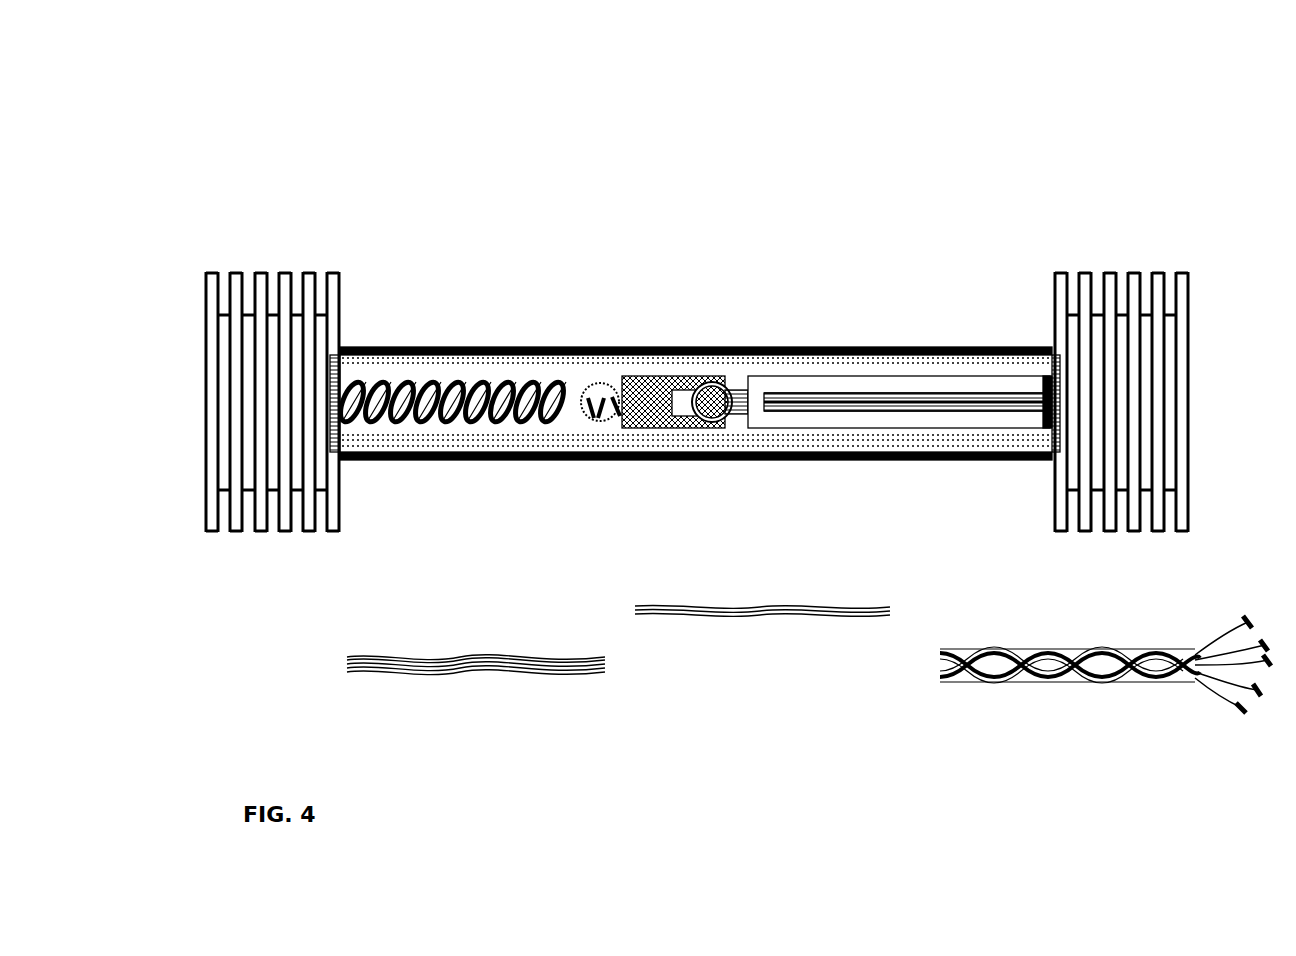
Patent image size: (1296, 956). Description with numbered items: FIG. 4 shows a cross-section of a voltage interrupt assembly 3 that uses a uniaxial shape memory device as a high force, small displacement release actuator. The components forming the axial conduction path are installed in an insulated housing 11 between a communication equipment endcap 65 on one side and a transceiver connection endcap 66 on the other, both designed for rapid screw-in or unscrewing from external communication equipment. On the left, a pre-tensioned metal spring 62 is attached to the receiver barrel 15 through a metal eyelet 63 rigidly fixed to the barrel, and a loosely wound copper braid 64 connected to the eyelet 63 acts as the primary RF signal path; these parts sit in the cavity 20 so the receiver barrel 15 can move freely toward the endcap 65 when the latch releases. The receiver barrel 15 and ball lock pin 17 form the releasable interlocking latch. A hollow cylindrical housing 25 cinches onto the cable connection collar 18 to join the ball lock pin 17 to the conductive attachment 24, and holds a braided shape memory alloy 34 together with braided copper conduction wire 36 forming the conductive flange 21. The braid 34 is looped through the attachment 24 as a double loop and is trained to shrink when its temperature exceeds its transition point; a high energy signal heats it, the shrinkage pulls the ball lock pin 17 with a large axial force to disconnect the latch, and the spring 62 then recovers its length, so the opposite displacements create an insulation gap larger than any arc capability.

The voltage interrupt assembly 3 is at (1202, 160).
The insulated housing 11 is at (652, 463).
The receiver barrel 15 is at (640, 372).
The ball lock pin 17 is at (742, 390).
The ball lock pin release connection collar 18 is at (766, 392).
The cavity 20 is at (436, 370).
The conductive flange 21 is at (1007, 386).
The conductive attachment 24 is at (1044, 372).
The hollow cylindrical housing 25 is at (900, 374).
The braided shape memory alloy 34 is at (930, 413).
The braided copper conduction wire 36 is at (795, 413).
The pre-tensioned metal spring 62 is at (381, 378).
The metal eyelet 63 is at (589, 383).
The copper braid 64 is at (614, 421).
The communication equipment endcap 65 is at (190, 342).
The transceiver connection endcap 66 is at (1192, 325).